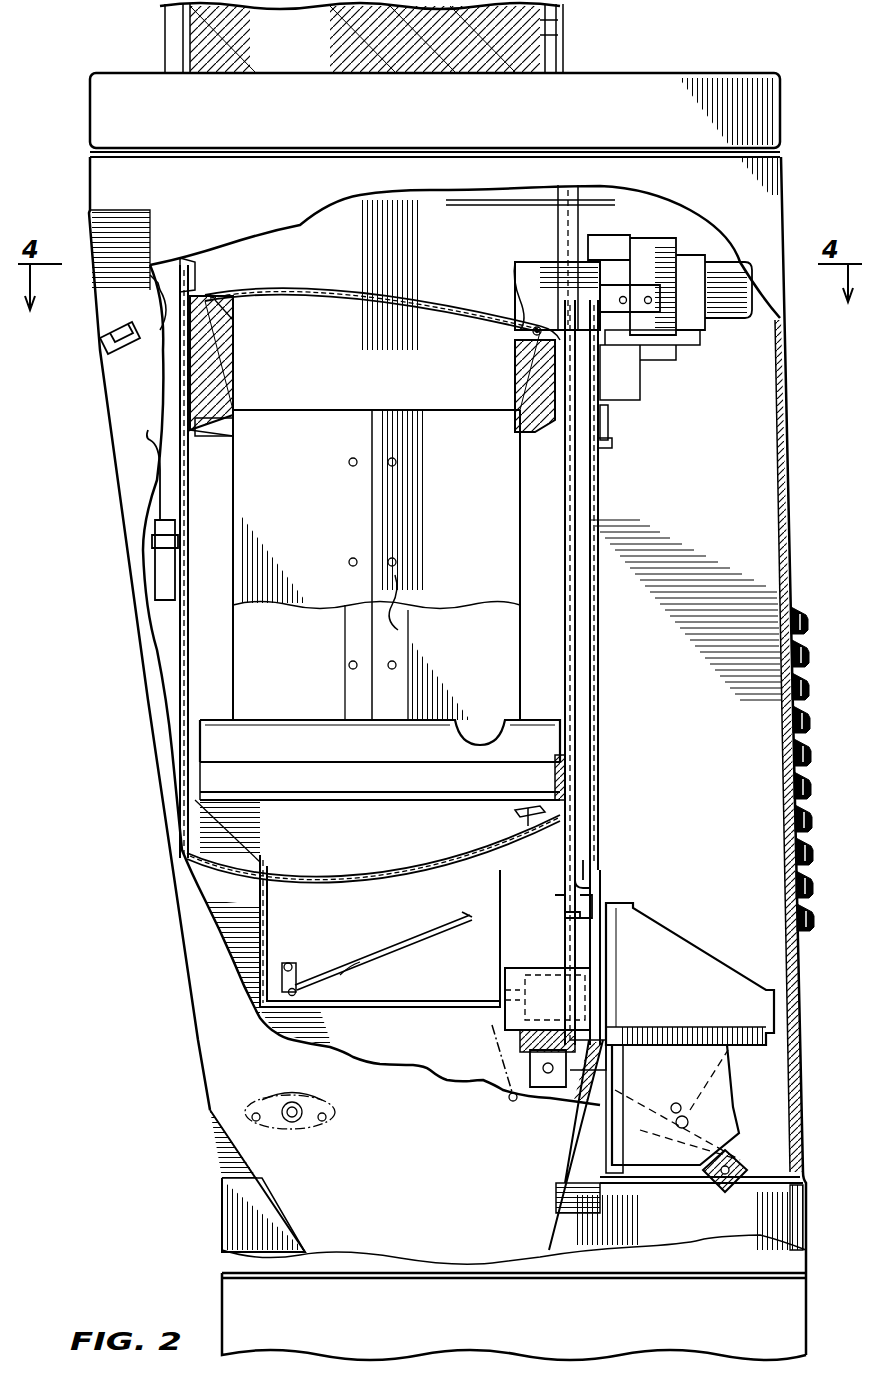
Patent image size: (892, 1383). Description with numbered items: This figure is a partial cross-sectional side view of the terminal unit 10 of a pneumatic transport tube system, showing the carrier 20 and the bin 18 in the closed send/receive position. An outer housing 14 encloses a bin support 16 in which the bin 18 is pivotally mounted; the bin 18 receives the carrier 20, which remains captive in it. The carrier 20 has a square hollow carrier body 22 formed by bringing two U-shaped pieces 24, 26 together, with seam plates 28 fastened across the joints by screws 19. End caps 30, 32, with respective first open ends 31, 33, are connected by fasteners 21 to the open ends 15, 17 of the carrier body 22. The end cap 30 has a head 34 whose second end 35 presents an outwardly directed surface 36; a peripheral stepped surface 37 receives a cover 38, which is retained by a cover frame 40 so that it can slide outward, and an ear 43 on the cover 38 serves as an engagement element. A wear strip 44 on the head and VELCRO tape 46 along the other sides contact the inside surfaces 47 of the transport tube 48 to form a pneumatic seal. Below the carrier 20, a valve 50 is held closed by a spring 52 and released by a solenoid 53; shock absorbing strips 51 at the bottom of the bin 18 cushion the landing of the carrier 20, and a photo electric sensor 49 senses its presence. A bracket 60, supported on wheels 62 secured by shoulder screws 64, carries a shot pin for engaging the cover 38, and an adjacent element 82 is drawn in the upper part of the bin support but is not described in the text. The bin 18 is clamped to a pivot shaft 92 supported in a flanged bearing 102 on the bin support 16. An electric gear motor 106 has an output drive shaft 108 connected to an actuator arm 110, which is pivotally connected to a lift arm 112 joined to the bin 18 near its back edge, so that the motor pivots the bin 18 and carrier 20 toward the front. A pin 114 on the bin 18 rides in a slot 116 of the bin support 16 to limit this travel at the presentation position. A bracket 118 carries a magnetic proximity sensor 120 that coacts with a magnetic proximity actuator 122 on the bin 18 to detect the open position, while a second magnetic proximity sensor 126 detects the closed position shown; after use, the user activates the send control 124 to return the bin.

The terminal unit 10 is at (96, 1160).
The outer housing 14 is at (785, 518).
The open end 15 is at (285, 412).
The bin support 16 is at (606, 697).
The open end 17 is at (487, 728).
The bin 18 is at (132, 450).
The screws 19 is at (400, 630).
The carrier 20 is at (538, 552).
The fasteners 21 is at (236, 425).
The carrier body 22 is at (530, 648).
The U-shaped piece 24 is at (330, 505).
The U-shaped piece 26 is at (465, 514).
The seam plates 28 is at (350, 640).
The end cap 30 is at (417, 310).
The first open end 31 is at (228, 442).
The end cap 32 is at (553, 744).
The first open end 33 is at (222, 722).
The head 34 is at (340, 371).
The second end 35 is at (196, 292).
The outwardly directed surface 36 is at (215, 300).
The peripheral stepped surface 37 is at (232, 328).
The cover 38 is at (264, 296).
The cover frame 40 is at (490, 300).
The ear 43 is at (530, 318).
The wear strip 44 is at (520, 372).
The VELCRO tape 46 is at (182, 378).
The inside surfaces 47 is at (560, 22).
The transport tube 48 is at (165, 30).
The photo electric sensor 49 is at (155, 592).
The valve 50 is at (446, 932).
The shock absorbing strips 51 is at (256, 858).
The spring 52 is at (366, 952).
The solenoid 53 is at (555, 980).
The bracket 60 is at (522, 268).
The wheels 62 is at (604, 445).
The shoulder screws 64 is at (610, 420).
The motor 82 is at (735, 276).
The pivot shaft 92 is at (296, 1100).
The flanged bearing 102 is at (322, 1128).
The electric gear motor 106 is at (730, 1045).
The output drive shaft 108 is at (716, 1094).
The actuator arm 110 is at (696, 1206).
The lift arm 112 is at (566, 1098).
The pin 114 is at (506, 1102).
The slot 116 is at (441, 1004).
The bracket 118 is at (590, 866).
The magnetic proximity sensor 120 is at (560, 910).
The magnetic proximity actuator 122 is at (612, 1012).
The send control 124 is at (104, 330).
The magnetic proximity sensor 126 is at (618, 1042).